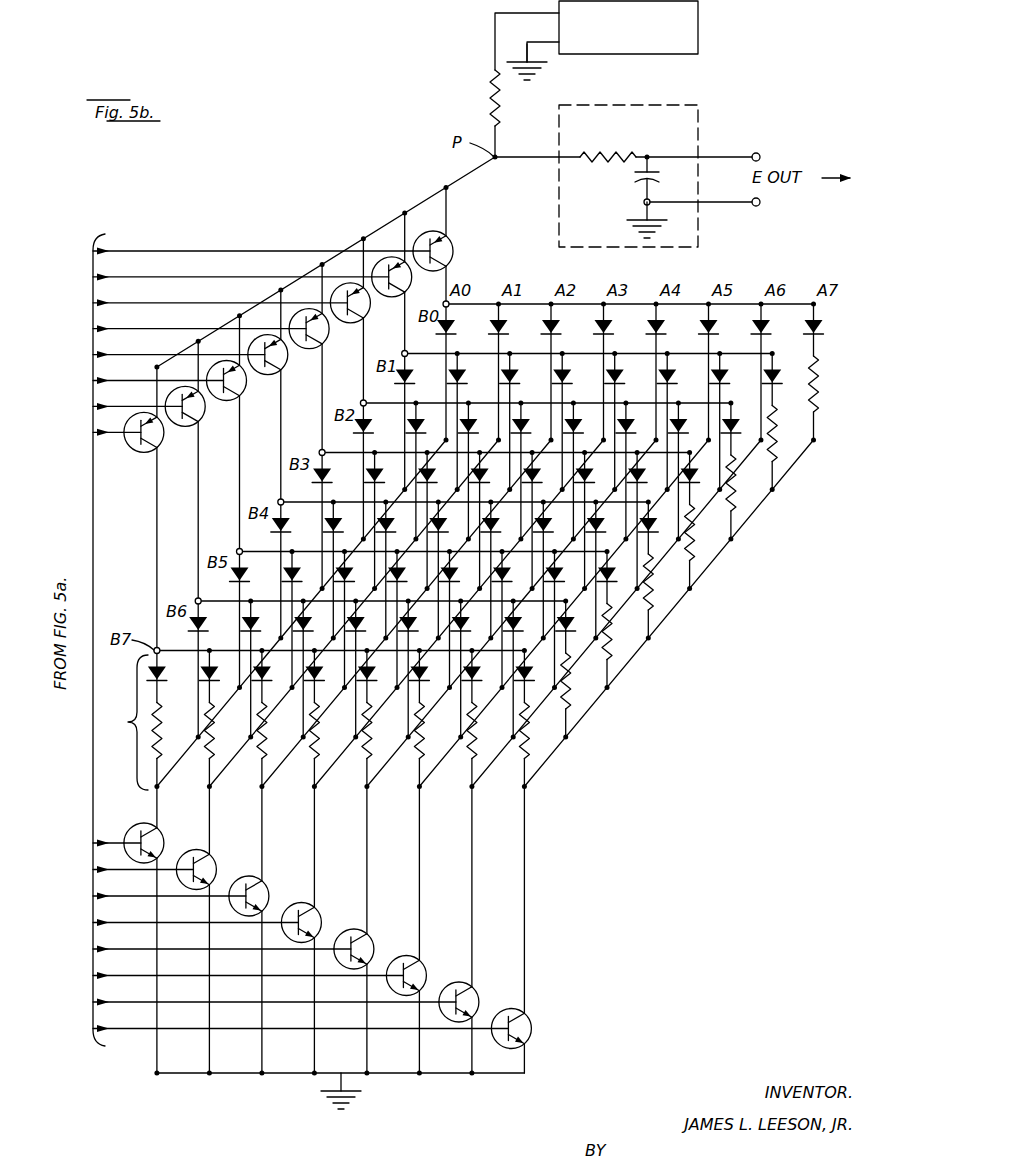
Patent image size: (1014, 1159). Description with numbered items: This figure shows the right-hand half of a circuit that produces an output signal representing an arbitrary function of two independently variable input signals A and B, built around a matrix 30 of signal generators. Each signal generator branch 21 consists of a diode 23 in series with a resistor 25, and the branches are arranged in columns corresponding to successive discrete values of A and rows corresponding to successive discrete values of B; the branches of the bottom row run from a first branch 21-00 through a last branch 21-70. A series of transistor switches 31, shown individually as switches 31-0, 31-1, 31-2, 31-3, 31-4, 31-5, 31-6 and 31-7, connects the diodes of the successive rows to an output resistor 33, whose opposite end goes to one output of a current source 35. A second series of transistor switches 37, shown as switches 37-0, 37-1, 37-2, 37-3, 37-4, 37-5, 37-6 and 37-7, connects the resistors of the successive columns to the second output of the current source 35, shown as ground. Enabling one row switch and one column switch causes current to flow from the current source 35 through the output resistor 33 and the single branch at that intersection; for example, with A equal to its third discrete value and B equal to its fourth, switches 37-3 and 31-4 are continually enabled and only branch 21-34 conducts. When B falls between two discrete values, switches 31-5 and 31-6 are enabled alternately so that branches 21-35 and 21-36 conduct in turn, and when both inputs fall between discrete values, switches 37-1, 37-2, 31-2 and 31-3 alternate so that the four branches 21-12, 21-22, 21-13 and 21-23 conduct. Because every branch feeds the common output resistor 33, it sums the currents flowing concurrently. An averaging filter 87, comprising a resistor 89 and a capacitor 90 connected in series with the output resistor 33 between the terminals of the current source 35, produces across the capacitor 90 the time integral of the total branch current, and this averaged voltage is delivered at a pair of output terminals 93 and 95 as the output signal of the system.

The current source 35 is at (700, 32).
The output resistor 33 is at (492, 100).
The averaging filter 87 is at (700, 120).
The resistor 89 is at (630, 163).
The capacitor 90 is at (641, 184).
The output terminal 93 is at (762, 155).
The output terminal 95 is at (760, 205).
The transistor switches 31 is at (318, 246).
The transistor switch 31-0 is at (425, 236).
The transistor switch 31-1 is at (383, 262).
The transistor switch 31-2 is at (342, 287).
The transistor switch 31-3 is at (300, 313).
The transistor switch 31-4 is at (258, 340).
The transistor switch 31-5 is at (217, 366).
The transistor switch 31-6 is at (167, 396).
The transistor switch 31-7 is at (130, 447).
The matrix 30 is at (703, 606).
The signal generator branch 21 is at (124, 722).
The matrix branch 21-00 is at (115, 718).
The matrix branch 21-12 is at (413, 417).
The matrix branch 21-22 is at (466, 417).
The matrix branch 21-13 is at (372, 467).
The matrix branch 21-23 is at (425, 466).
The matrix branch 21-34 is at (436, 517).
The matrix branch 21-35 is at (394, 566).
The matrix branch 21-36 is at (353, 617).
The matrix branch 21-70 is at (538, 756).
The diode 23 is at (159, 673).
The resistor 25 is at (172, 741).
The transistor switches 37 is at (492, 965).
The transistor switch 37-0 is at (153, 828).
The transistor switch 37-1 is at (205, 854).
The transistor switch 37-2 is at (258, 881).
The transistor switch 37-3 is at (310, 907).
The transistor switch 37-4 is at (363, 934).
The transistor switch 37-5 is at (416, 960).
The transistor switch 37-6 is at (468, 987).
The transistor switch 37-7 is at (517, 1013).